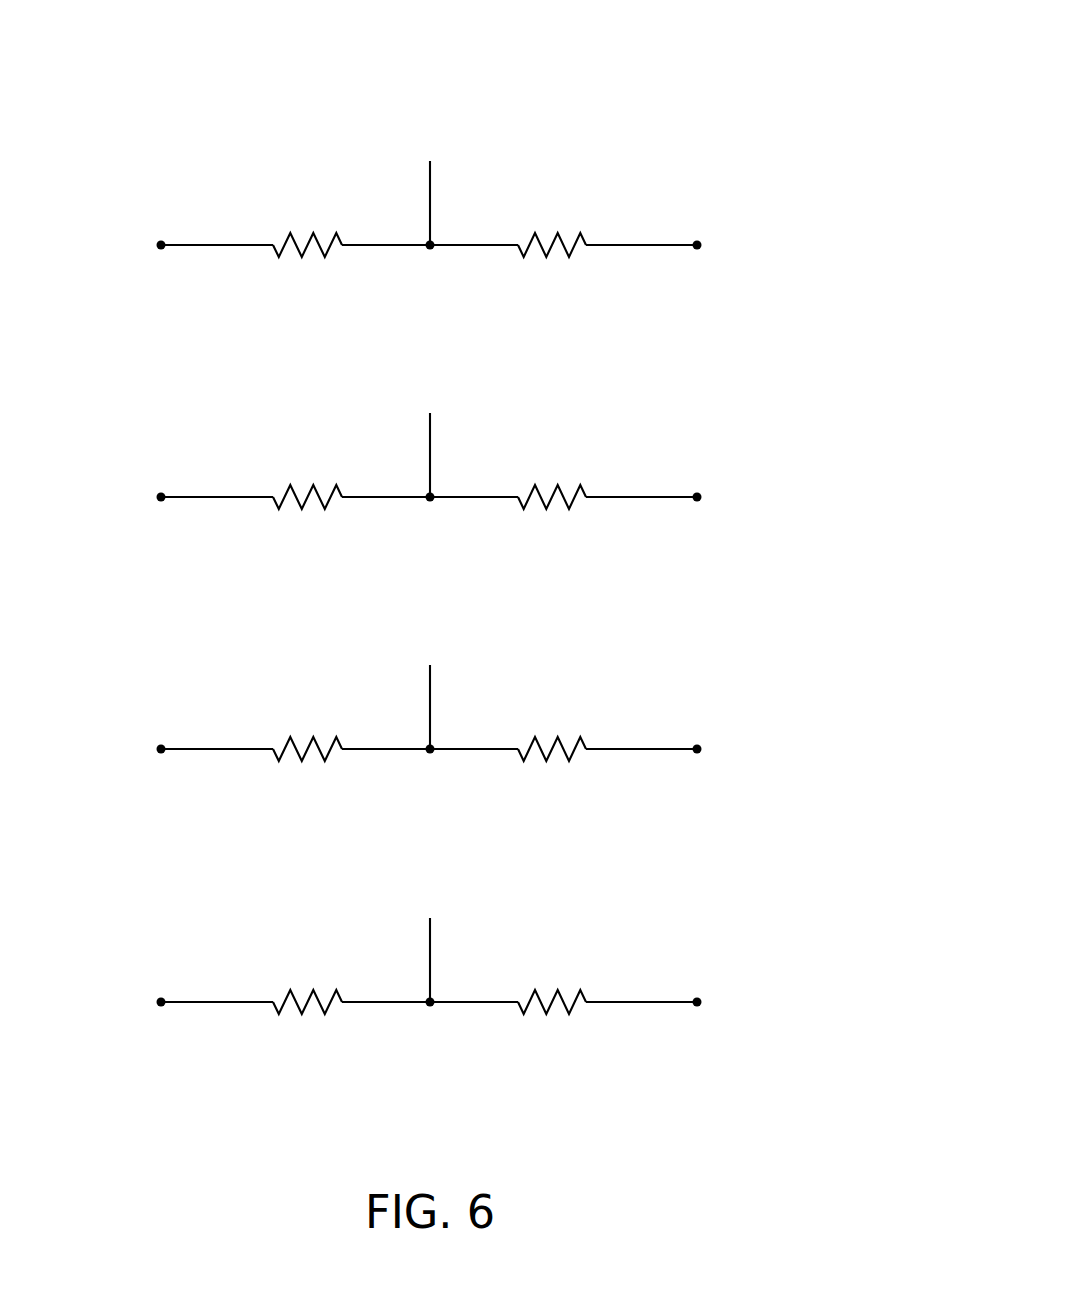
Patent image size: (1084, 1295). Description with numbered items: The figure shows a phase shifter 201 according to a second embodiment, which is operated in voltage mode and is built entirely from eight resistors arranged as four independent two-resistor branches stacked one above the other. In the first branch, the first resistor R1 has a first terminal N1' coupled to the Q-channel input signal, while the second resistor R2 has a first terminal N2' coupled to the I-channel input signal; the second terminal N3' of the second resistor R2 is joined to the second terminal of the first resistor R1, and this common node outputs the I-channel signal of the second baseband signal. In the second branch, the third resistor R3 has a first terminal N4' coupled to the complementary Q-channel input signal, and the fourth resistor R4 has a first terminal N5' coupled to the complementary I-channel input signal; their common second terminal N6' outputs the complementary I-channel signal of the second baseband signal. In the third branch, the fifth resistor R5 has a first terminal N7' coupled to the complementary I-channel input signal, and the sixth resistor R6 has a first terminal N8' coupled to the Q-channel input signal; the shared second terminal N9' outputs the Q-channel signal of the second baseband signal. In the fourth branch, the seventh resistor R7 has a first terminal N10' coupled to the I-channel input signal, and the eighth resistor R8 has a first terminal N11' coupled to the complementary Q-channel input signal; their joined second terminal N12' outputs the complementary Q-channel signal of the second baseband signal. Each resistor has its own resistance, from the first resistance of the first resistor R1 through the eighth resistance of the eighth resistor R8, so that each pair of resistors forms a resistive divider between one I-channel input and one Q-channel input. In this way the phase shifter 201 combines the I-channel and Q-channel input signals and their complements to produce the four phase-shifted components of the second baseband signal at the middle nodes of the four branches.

The phase shifter 201 is at (674, 99).
The first resistor R1 is at (307, 228).
The second resistor R2 is at (552, 228).
The third resistor R3 is at (307, 480).
The fourth resistor R4 is at (552, 480).
The fifth resistor R5 is at (307, 732).
The sixth resistor R6 is at (552, 732).
The seventh resistor R7 is at (307, 985).
The eighth resistor R8 is at (552, 985).
The first terminal of the first resistor N1' is at (162, 262).
The first terminal of the second resistor N2' is at (699, 262).
The second terminal of the second resistor N3' is at (431, 262).
The first terminal of the third resistor N4' is at (162, 514).
The first terminal of the fourth resistor N5' is at (699, 514).
The second terminal of the fourth resistor N6' is at (431, 514).
The first terminal of the fifth resistor N7' is at (162, 766).
The first terminal of the sixth resistor N8' is at (699, 766).
The second terminal of the sixth resistor N9' is at (431, 766).
The first terminal of the seventh resistor N10' is at (158, 1019).
The first terminal of the eighth resistor N11' is at (697, 1019).
The second terminal of the eighth resistor N12' is at (430, 1019).